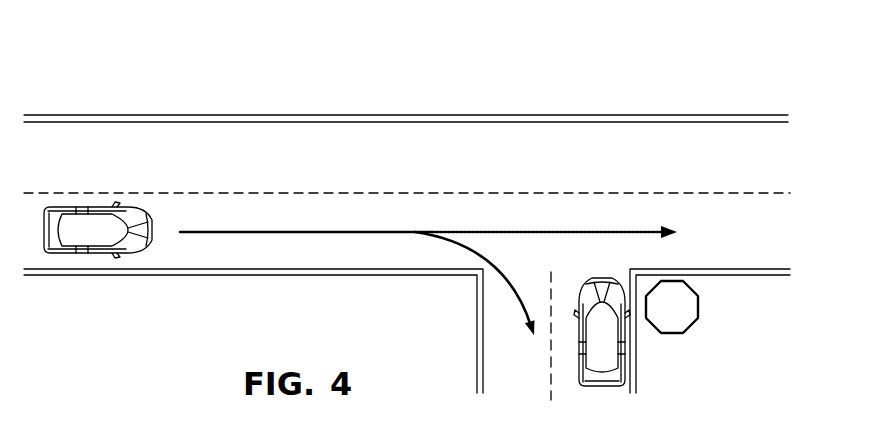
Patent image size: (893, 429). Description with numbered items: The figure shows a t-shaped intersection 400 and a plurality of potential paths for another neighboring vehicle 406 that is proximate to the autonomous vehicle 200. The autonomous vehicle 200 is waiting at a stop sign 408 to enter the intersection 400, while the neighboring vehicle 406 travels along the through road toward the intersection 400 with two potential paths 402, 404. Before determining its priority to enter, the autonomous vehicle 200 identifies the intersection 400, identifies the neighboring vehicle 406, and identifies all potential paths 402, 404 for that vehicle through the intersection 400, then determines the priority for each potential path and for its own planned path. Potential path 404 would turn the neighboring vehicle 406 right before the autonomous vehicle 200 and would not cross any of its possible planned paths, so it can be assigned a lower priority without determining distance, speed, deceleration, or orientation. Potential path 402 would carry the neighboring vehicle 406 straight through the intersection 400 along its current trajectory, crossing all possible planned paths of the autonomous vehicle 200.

The t-shaped intersection 400 is at (692, 86).
The potential path 402 is at (583, 230).
The potential path 404 is at (500, 259).
The neighboring vehicle 406 is at (92, 246).
The stop sign 408 is at (700, 298).
The autonomous vehicle 200 is at (608, 356).